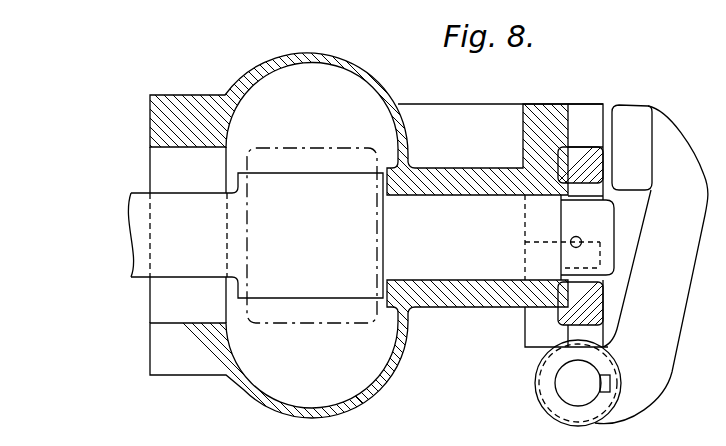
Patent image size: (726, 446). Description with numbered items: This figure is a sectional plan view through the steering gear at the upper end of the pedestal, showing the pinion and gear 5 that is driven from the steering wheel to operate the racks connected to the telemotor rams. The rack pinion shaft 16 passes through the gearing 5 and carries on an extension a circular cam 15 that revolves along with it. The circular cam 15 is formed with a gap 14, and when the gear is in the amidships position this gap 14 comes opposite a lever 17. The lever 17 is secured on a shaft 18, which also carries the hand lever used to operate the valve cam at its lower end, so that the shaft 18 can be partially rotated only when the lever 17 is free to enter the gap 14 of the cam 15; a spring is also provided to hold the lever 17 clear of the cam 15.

The pinion and gear 5 is at (307, 235).
The gap 14 is at (633, 222).
The circular cam 15 is at (600, 295).
The rack pinion shaft 16 is at (180, 235).
The lever 17 is at (651, 264).
The shaft 18 is at (578, 383).